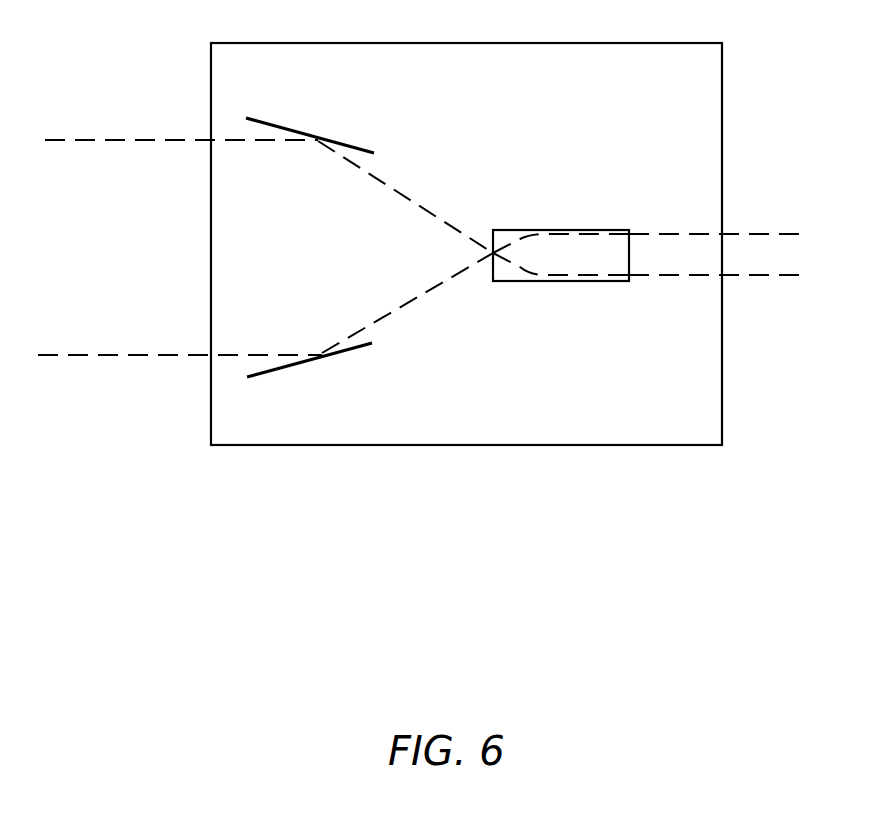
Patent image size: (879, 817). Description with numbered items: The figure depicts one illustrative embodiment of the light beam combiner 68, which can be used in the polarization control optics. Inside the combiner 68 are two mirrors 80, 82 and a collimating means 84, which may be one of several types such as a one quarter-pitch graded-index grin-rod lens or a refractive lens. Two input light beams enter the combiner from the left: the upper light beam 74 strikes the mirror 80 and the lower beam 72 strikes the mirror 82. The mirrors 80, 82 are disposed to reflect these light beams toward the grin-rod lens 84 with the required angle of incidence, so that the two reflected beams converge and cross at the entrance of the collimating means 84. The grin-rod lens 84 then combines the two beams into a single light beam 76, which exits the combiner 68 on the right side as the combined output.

The light beam combiner 68 is at (448, 43).
The first input laser beam 72 is at (128, 352).
The light beam 74 is at (130, 143).
The light beam 76 is at (800, 277).
The mirror 80 is at (366, 146).
The mirror 82 is at (352, 352).
The collimating means 84 is at (515, 230).